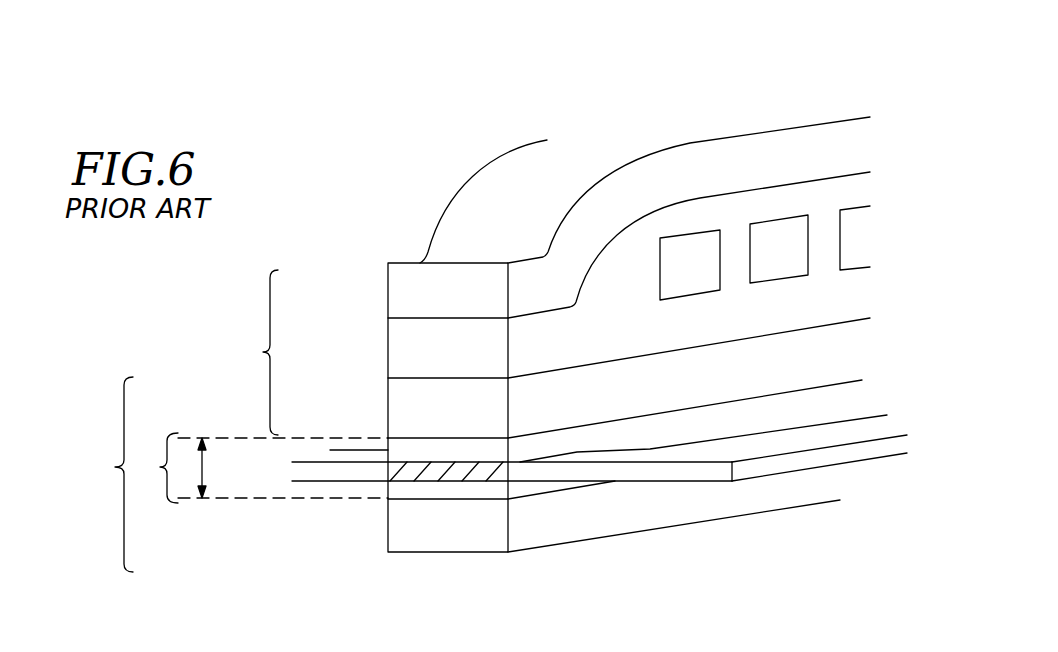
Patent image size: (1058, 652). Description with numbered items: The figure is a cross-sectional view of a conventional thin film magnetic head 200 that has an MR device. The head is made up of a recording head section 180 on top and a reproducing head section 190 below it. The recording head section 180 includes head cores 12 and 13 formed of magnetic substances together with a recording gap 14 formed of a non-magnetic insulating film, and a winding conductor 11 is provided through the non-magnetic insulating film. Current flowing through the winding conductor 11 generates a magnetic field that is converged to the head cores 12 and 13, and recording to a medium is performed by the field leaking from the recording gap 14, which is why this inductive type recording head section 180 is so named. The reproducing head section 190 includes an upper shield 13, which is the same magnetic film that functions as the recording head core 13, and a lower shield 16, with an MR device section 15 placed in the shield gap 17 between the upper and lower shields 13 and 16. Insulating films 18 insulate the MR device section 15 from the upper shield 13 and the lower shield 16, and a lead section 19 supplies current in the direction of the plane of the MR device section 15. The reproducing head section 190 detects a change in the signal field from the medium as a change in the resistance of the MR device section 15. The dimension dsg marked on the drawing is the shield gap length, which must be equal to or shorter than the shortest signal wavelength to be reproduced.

The conventional thin film magnetic head 200 is at (758, 49).
The winding conductor 11 is at (705, 282).
The head core 12 is at (393, 282).
The recording gap 14 is at (393, 350).
The head core / upper shield 13 is at (393, 405).
The MR device section 15 is at (452, 483).
The lower shield 16 is at (420, 537).
The shield gap 17 is at (319, 468).
The insulating films 18 is at (617, 435).
The lead section 19 is at (320, 470).
The recording head section 180 is at (245, 352).
The reproducing head section 190 is at (98, 474).
The shield gap length dsg is at (206, 468).